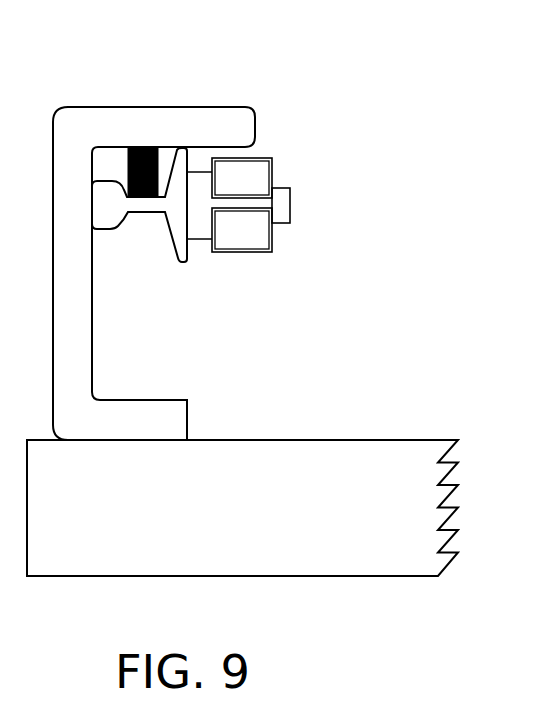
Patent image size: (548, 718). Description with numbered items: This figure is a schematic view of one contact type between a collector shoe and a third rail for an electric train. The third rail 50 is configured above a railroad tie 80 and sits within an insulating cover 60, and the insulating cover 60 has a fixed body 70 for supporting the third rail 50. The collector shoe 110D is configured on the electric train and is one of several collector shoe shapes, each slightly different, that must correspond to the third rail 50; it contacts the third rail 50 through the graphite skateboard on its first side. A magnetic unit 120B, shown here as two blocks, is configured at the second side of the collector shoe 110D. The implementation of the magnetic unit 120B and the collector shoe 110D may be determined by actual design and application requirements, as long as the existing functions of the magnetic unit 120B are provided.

The third rail 50 is at (108, 230).
The insulating cover 60 is at (205, 125).
The fixed body 70 is at (142, 147).
The railroad tie 80 is at (242, 508).
The collector shoe 110D is at (292, 205).
The magnetic unit 120B is at (229, 205).